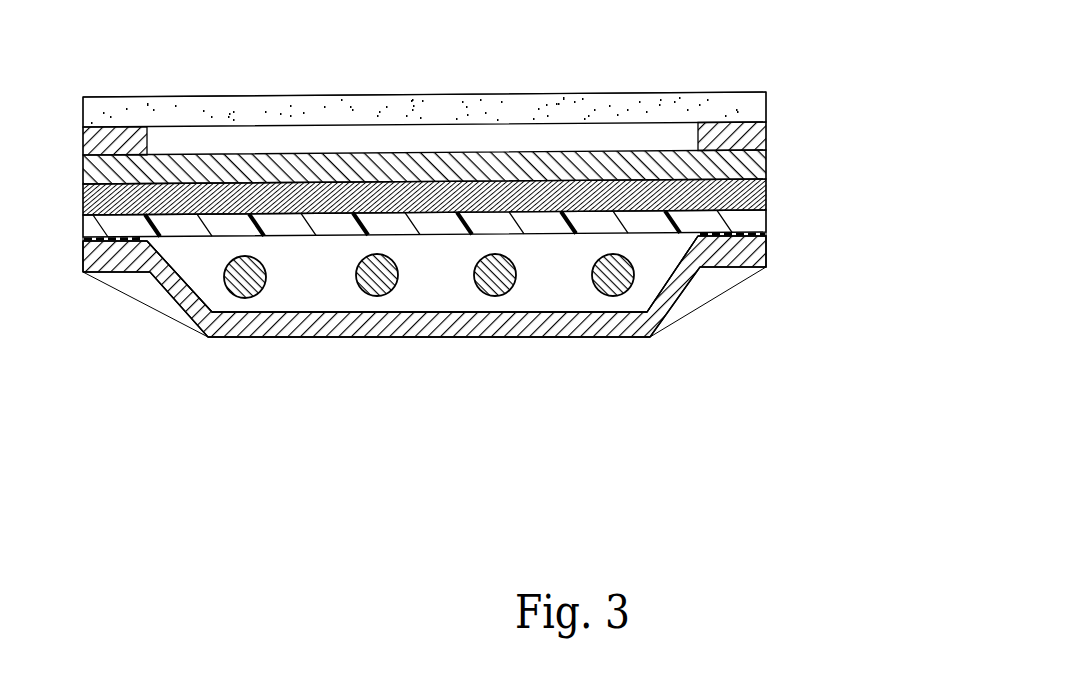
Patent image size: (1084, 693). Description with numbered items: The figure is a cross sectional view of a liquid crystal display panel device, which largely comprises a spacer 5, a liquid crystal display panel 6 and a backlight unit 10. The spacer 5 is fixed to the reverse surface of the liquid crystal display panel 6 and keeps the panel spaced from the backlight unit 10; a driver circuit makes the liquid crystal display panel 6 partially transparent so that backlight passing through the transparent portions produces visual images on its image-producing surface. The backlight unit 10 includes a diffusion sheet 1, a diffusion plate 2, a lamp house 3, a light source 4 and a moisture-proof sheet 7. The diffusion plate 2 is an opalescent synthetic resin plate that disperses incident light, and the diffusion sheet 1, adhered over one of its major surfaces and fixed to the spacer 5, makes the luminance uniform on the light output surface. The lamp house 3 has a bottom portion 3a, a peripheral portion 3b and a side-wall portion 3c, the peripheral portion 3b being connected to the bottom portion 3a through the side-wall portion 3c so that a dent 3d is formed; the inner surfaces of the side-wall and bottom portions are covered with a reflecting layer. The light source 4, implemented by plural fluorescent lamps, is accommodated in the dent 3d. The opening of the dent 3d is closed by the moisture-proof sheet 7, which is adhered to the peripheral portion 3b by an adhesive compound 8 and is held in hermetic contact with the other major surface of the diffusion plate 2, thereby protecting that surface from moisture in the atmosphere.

The diffusion sheet 1 is at (767, 162).
The diffusion plate 2 is at (767, 193).
The lamp house 3 is at (778, 258).
The bottom portion 3a is at (503, 337).
The peripheral portion 3b is at (105, 272).
The side-wall portion 3c is at (172, 300).
The dent 3d is at (447, 281).
The light source 4 is at (360, 284).
The spacer 5 is at (767, 123).
The liquid crystal display panel 6 is at (752, 107).
The moisture-proof sheet 7 is at (767, 220).
The adhesive compound 8 is at (767, 233).
The backlight unit 10 is at (798, 390).